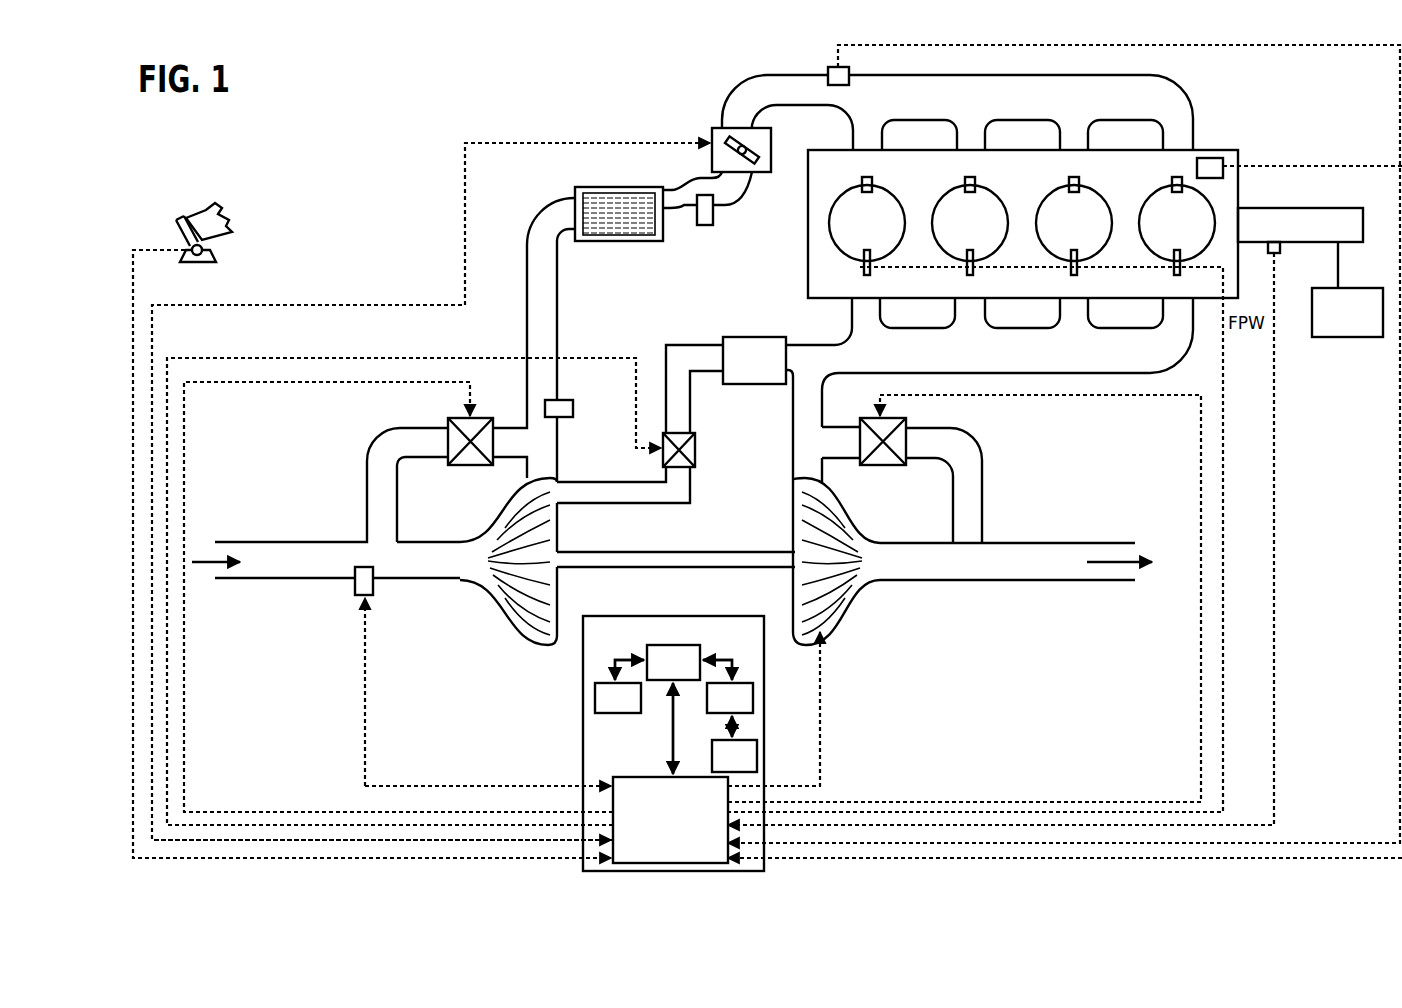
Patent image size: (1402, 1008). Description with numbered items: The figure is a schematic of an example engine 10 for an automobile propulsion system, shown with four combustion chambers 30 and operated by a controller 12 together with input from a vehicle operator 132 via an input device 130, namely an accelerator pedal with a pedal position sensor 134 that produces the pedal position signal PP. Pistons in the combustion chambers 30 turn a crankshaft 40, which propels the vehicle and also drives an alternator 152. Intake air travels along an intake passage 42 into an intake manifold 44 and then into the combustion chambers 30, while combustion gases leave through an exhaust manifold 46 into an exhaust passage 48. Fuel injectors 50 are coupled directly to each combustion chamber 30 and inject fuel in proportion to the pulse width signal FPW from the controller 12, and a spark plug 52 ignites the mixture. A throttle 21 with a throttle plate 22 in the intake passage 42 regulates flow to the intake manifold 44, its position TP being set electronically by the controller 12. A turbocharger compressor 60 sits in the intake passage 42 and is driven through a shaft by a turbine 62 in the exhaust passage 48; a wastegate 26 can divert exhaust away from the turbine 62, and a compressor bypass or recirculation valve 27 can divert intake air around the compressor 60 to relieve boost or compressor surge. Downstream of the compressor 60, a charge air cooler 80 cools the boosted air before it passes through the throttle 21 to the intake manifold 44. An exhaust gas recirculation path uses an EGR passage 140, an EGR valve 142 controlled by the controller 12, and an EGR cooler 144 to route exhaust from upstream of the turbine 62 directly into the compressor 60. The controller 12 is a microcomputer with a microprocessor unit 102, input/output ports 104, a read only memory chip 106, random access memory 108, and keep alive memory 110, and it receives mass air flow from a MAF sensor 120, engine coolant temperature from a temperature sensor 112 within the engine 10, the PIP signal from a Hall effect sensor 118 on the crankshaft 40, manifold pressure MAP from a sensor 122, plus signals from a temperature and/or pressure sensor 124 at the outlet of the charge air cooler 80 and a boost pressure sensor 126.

The engine 10 is at (1106, 178).
The controller 12 is at (608, 757).
The throttle 21 is at (712, 126).
The throttle plate 22 is at (757, 162).
The wastegate 26 is at (906, 427).
The compressor bypass or recirculation valve (CRV) 27 is at (446, 424).
The combustion chamber 30 is at (858, 233).
The crankshaft 40 is at (1253, 208).
The intake passage 42 is at (258, 571).
The intake manifold 44 is at (881, 106).
The exhaust manifold 46 is at (1013, 361).
The exhaust passage 48 is at (799, 409).
The fuel injector 50 is at (862, 274).
The spark plug 52 is at (872, 178).
The compressor 60 is at (512, 604).
The turbine 62 is at (835, 516).
The charge air cooler (CAC) 80 is at (580, 187).
The microprocessor unit 102 is at (640, 657).
The input/output ports 104 is at (685, 857).
The read only memory chip 106 is at (595, 708).
The random access memory 108 is at (753, 683).
The keep alive memory 110 is at (757, 740).
The temperature sensor 112 is at (1212, 158).
The Hall effect sensor 118 is at (1268, 252).
The MAF sensor 120 is at (373, 592).
The MAP sensor 122 is at (850, 72).
The temperature and/or pressure sensor 124 is at (705, 226).
The boost pressure sensor 126 is at (575, 410).
The input device 130 is at (180, 228).
The vehicle operator 132 is at (228, 218).
The pedal position sensor 134 is at (204, 250).
The EGR passage 140 is at (668, 345).
The EGR valve 142 is at (690, 431).
The EGR cooler 144 is at (768, 370).
The alternator 152 is at (1335, 322).